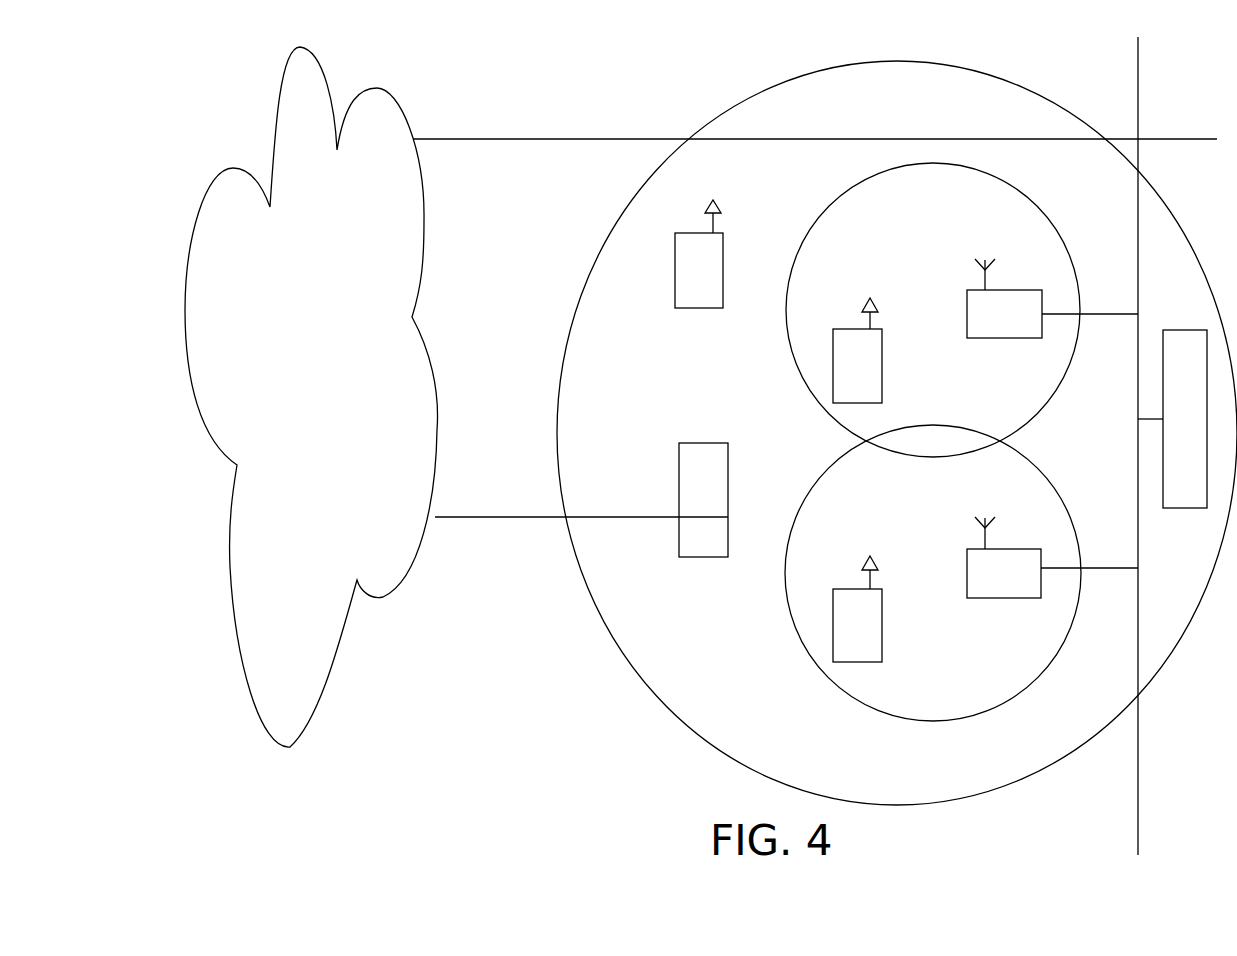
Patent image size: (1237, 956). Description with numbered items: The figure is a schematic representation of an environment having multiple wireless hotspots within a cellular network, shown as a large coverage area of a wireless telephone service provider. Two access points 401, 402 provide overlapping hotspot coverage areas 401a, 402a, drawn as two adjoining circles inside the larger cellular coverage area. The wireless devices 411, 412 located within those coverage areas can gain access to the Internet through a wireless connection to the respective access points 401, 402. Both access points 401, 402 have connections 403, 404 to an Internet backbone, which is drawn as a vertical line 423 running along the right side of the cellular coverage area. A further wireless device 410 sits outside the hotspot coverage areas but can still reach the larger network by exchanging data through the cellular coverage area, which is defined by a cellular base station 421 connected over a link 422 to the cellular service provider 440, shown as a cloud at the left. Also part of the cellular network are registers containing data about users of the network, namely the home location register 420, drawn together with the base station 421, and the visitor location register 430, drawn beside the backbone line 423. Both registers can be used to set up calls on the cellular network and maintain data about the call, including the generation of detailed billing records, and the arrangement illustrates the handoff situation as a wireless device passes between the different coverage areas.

The cellular service provider 440 is at (312, 209).
The network backbone line 423 is at (1140, 137).
The coverage area 401a is at (915, 201).
The coverage area 402a is at (983, 500).
The wireless device 410 is at (674, 295).
The wireless device 411 is at (883, 366).
The wireless device 412 is at (883, 626).
The access point 401 is at (1003, 338).
The access point 402 is at (1003, 598).
The connection 403 is at (1108, 314).
The connection 404 is at (1108, 570).
The visitor location register 430 is at (1184, 329).
The home location register 420 is at (703, 557).
The cellular base station 421 is at (679, 480).
The network link 422 is at (596, 517).